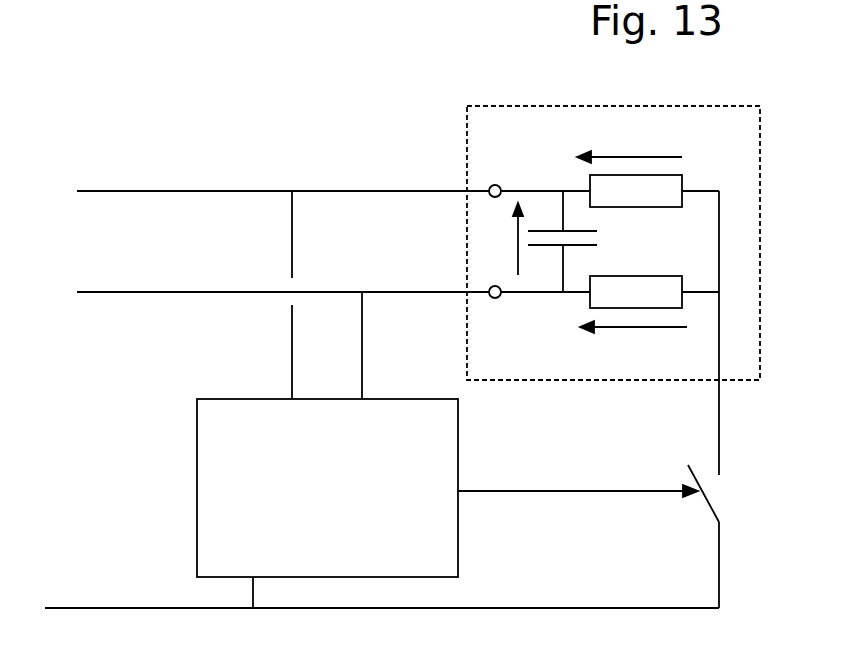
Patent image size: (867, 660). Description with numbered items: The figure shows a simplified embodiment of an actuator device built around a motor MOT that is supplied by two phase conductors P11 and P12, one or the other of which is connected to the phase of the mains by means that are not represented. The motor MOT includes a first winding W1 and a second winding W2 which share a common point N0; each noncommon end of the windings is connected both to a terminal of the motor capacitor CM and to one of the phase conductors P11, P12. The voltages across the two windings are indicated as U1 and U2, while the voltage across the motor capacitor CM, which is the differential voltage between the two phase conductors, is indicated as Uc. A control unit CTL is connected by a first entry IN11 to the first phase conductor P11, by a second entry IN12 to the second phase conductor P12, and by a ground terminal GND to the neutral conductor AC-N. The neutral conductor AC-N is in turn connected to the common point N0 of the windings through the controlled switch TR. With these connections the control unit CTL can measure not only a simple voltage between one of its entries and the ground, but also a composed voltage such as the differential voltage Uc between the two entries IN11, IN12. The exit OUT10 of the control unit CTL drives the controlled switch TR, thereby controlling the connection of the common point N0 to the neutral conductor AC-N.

The motor MOT is at (580, 240).
The first phase conductor P11 is at (333, 179).
The second phase conductor P12 is at (333, 280).
The motor capacitor CM is at (583, 241).
The differential voltage Uc is at (500, 239).
The first winding W1 is at (654, 209).
The second winding W2 is at (654, 279).
The first winding voltage U1 is at (629, 147).
The second winding voltage U2 is at (633, 342).
The common point N0 is at (698, 333).
The controlled switch TR is at (685, 528).
The control unit CTL is at (327, 488).
The first entry IN11 is at (303, 312).
The second entry IN12 is at (374, 363).
The exit OUT10 is at (532, 497).
The ground terminal GND is at (252, 576).
The neutral conductor AC-N is at (382, 593).